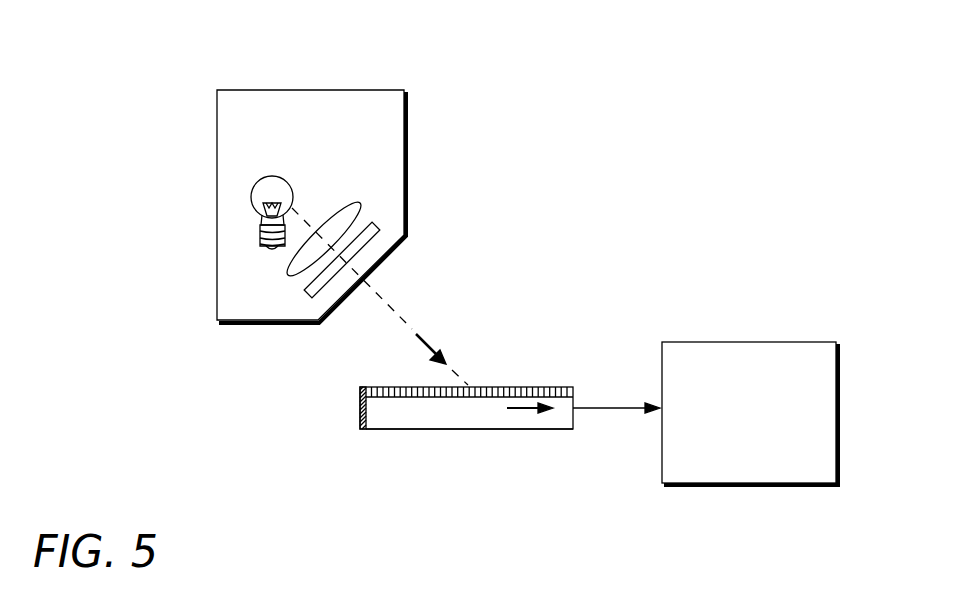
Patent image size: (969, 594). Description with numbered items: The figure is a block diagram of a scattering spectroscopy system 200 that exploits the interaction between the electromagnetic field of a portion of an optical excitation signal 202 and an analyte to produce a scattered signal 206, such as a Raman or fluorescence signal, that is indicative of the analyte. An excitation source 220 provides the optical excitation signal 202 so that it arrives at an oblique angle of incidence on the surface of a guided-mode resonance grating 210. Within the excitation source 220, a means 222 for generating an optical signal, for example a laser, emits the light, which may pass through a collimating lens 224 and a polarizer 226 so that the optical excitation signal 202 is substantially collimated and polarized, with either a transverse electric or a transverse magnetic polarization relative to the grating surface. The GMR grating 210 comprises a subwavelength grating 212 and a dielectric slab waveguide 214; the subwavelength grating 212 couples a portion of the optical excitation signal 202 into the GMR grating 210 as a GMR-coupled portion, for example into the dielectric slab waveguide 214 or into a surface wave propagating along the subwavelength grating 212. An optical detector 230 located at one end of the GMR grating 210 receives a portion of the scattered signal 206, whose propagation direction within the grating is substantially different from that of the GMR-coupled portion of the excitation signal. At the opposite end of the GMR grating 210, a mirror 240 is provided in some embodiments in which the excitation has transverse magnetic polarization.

The spectroscopy system 200 is at (742, 95).
The optical excitation signal 202 is at (434, 343).
The scattered signal 206 is at (527, 414).
The guided-mode resonance (GMR) grating 210 is at (547, 332).
The subwavelength grating 212 is at (375, 387).
The dielectric slab waveguide 214 is at (377, 430).
The excitation source 220 is at (312, 90).
The means for generating an optical signal 222 is at (251, 196).
The collimating lens 224 is at (357, 203).
The polarizer 226 is at (371, 225).
The optical detector 230 is at (749, 342).
The mirror 240 is at (360, 405).